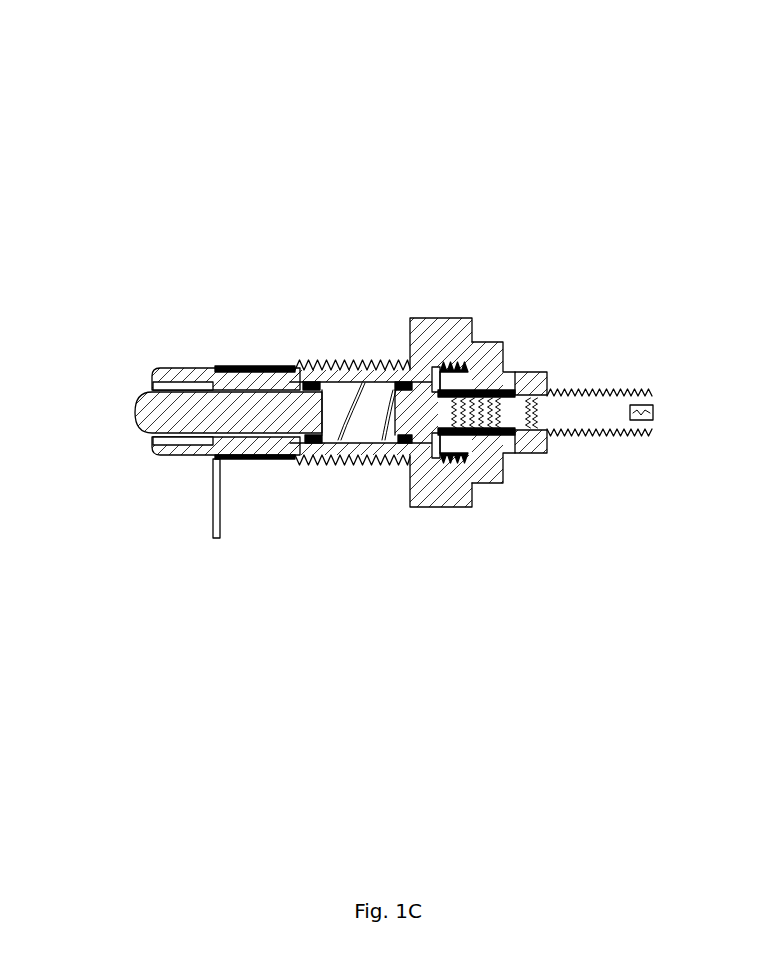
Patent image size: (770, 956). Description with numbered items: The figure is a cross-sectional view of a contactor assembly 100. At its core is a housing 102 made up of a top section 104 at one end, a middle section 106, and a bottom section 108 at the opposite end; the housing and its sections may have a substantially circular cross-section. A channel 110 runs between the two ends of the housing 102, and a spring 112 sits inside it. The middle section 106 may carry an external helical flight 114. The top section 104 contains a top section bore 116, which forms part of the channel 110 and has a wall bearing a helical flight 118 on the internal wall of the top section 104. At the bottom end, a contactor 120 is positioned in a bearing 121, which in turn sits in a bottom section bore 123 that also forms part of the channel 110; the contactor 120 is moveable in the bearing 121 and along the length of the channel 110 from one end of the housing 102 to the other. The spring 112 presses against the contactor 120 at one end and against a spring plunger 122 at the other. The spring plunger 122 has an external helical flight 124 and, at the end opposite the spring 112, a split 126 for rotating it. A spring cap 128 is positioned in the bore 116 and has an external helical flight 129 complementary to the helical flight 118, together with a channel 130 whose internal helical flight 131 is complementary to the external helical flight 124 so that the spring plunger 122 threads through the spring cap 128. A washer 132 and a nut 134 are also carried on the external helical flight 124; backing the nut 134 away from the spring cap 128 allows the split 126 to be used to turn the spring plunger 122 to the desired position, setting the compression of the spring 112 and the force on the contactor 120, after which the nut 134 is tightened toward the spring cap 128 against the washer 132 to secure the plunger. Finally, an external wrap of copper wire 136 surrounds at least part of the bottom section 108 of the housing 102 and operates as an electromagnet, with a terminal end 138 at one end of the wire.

The contactor assembly 100 is at (362, 149).
The housing 102 is at (342, 333).
The top section 104 is at (466, 519).
The middle section 106 is at (382, 349).
The bottom section 108 is at (242, 351).
The channel 110 is at (365, 423).
The spring 112 is at (348, 444).
The external helical flight 114 is at (323, 353).
The top section bore 116 is at (455, 366).
The helical flight 118 is at (453, 462).
The contactor 120 is at (121, 404).
The bearing 121 is at (178, 382).
The spring plunger 122 is at (588, 413).
The bottom section bore 123 is at (165, 447).
The external helical flight 124 is at (608, 390).
The split 126 is at (653, 413).
The spring cap 128 is at (501, 331).
The external helical flight 129 is at (442, 363).
The channel 130 is at (478, 435).
The internal helical flight 131 is at (484, 390).
The washer 132 is at (514, 371).
The nut 134 is at (536, 455).
The external wrap of copper wire 136 is at (273, 460).
The terminal end 138 is at (212, 527).